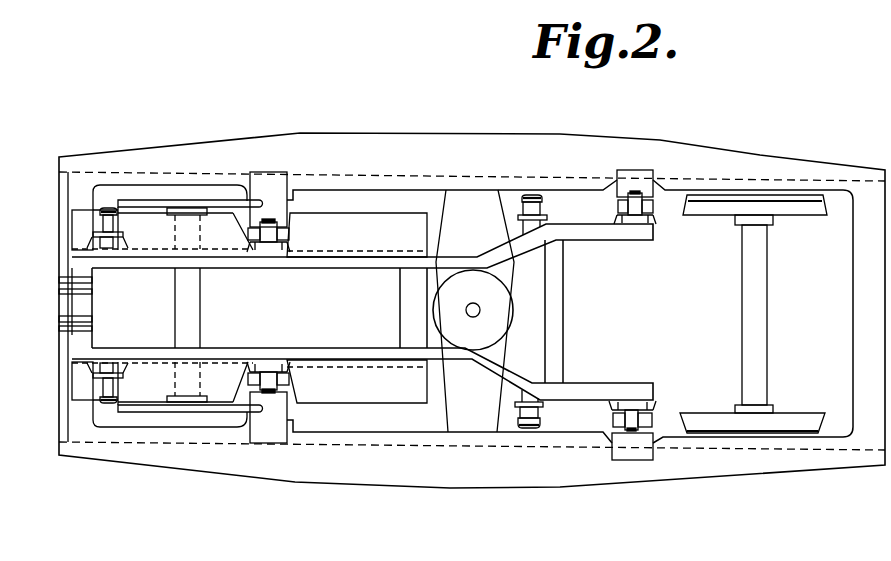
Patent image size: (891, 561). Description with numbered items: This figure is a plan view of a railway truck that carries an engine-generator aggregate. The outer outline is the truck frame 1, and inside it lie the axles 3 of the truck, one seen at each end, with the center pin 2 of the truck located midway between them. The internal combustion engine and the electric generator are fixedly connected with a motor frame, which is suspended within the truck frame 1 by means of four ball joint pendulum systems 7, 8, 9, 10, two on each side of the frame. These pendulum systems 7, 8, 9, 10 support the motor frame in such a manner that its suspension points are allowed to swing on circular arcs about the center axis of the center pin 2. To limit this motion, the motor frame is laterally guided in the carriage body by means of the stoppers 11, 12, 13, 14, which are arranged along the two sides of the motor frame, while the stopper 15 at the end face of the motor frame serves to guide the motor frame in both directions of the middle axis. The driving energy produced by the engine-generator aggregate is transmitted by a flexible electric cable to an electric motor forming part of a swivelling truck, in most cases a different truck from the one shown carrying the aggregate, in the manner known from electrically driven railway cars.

The truck frame 1 is at (414, 143).
The center pin 2 is at (497, 318).
The axles 3 is at (192, 308).
The ball joint pendulum system 7 is at (273, 247).
The ball joint pendulum system 8 is at (637, 197).
The ball joint pendulum system 9 is at (267, 372).
The ball joint pendulum system 10 is at (630, 430).
The stopper 11 is at (100, 222).
The stopper 12 is at (531, 194).
The stopper 13 is at (100, 385).
The stopper 14 is at (528, 427).
The stopper 15 is at (72, 303).